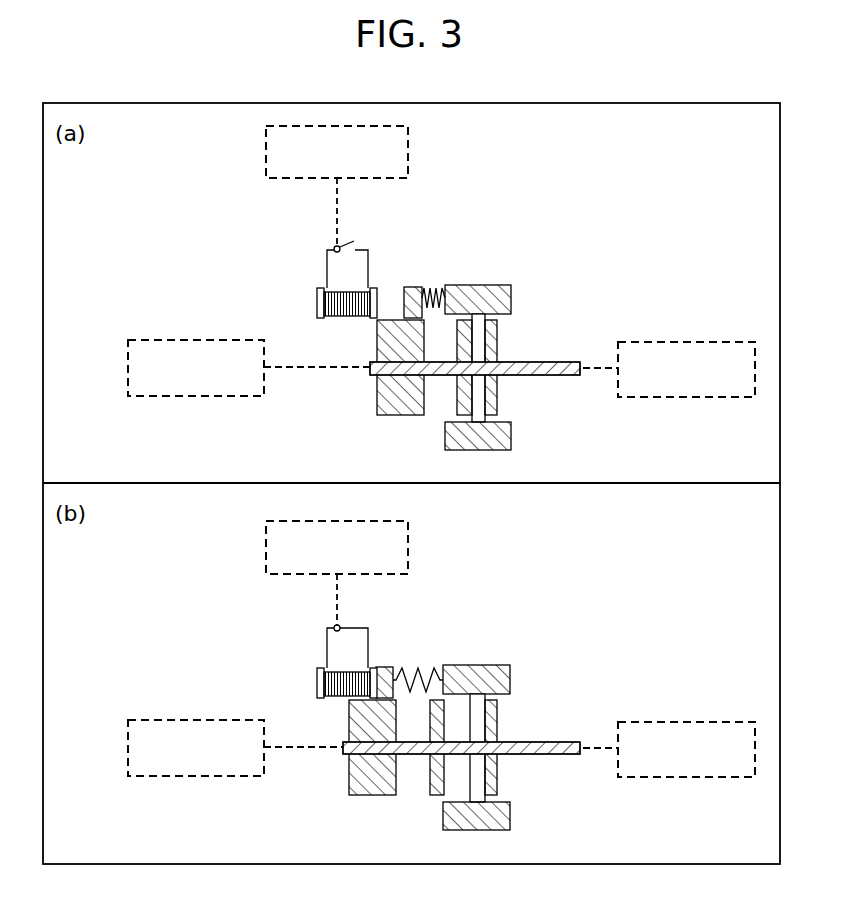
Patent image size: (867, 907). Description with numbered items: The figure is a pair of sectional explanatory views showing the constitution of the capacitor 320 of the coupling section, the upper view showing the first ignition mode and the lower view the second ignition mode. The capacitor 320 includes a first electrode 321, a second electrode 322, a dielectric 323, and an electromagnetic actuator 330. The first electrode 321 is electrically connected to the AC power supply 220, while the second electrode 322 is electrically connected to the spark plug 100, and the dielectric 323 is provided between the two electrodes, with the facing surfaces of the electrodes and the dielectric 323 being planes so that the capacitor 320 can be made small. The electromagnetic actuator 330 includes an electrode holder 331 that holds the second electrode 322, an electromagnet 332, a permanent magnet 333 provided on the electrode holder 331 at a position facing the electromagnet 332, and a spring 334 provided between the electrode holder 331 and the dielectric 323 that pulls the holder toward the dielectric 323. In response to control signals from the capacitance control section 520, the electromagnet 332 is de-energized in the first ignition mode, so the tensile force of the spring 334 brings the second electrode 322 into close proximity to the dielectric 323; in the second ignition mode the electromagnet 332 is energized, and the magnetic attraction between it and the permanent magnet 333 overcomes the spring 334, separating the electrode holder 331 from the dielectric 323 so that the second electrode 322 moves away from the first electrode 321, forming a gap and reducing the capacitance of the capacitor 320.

The spark plug 100 is at (196, 338).
The AC power supply 220 is at (693, 340).
The capacitor 320 is at (573, 182).
The first electrode 321 is at (498, 395).
The second electrode 322 is at (455, 394).
The dielectric 323 is at (478, 451).
The electromagnetic actuator 330 is at (424, 222).
The electrode holder 331 is at (377, 341).
The electromagnet 332 is at (316, 302).
The permanent magnet 333 is at (410, 286).
The spring 334 is at (437, 287).
The capacitance control section 520 is at (408, 160).